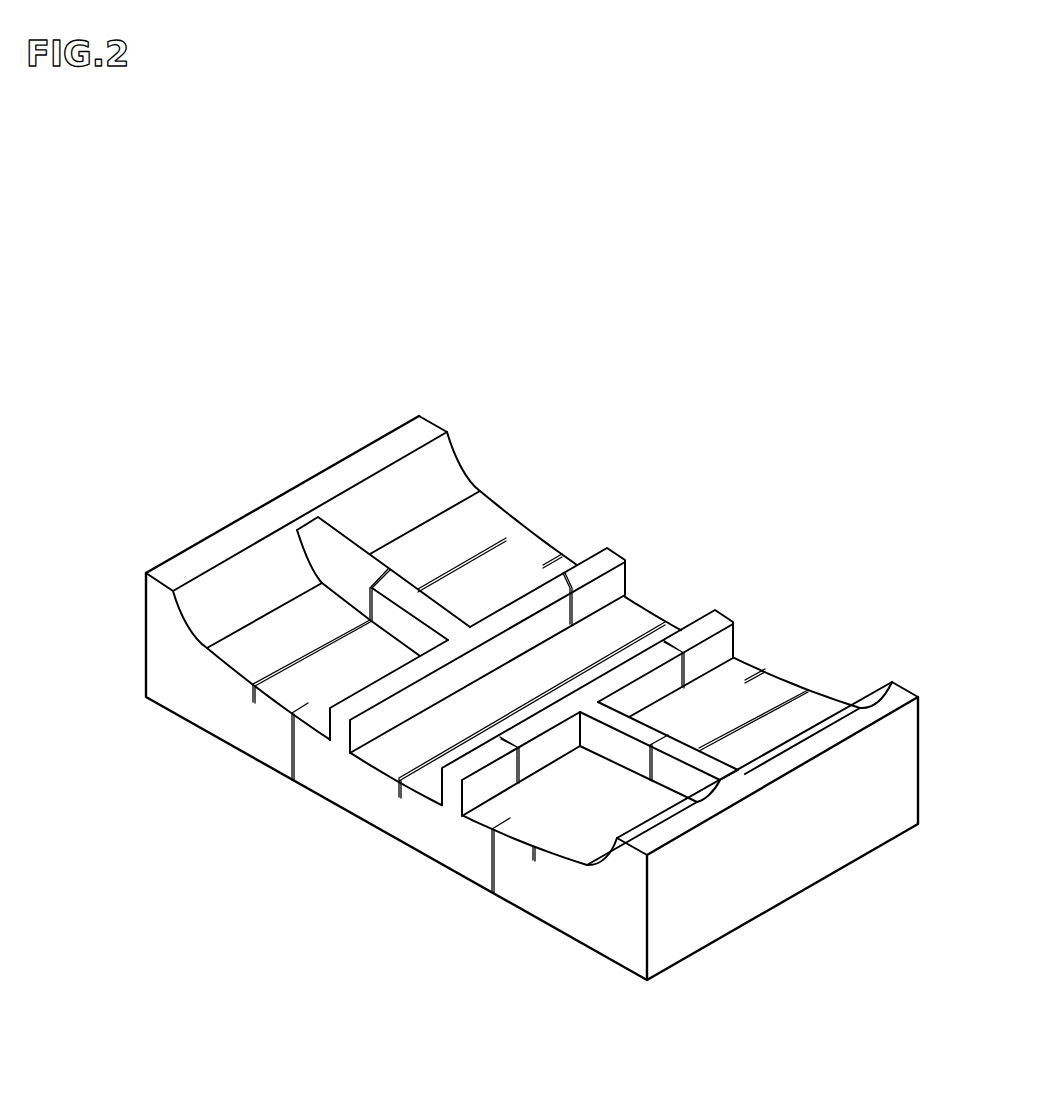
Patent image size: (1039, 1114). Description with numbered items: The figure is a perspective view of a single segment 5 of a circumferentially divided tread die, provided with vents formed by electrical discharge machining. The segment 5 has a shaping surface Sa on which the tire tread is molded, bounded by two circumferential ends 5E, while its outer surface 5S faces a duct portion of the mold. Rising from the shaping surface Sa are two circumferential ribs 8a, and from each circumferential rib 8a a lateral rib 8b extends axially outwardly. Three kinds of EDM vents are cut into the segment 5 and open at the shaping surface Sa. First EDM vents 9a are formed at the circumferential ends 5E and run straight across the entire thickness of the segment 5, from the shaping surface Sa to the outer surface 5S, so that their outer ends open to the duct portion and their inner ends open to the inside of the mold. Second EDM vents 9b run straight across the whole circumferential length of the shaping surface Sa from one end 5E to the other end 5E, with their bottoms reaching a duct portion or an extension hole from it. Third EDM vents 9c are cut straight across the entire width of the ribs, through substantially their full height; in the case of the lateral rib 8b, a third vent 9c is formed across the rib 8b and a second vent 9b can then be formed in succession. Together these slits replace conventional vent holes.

The segment 5 is at (160, 539).
The shaping surface Sa is at (268, 645).
The circumferential rib 8a is at (623, 557).
The lateral rib 8b is at (335, 545).
The first EDM vent 9a is at (290, 745).
The second EDM vent 9b is at (505, 538).
The third EDM vent 9c is at (376, 574).
The outer surface 5S is at (184, 725).
The circumferential end 5E is at (793, 678).